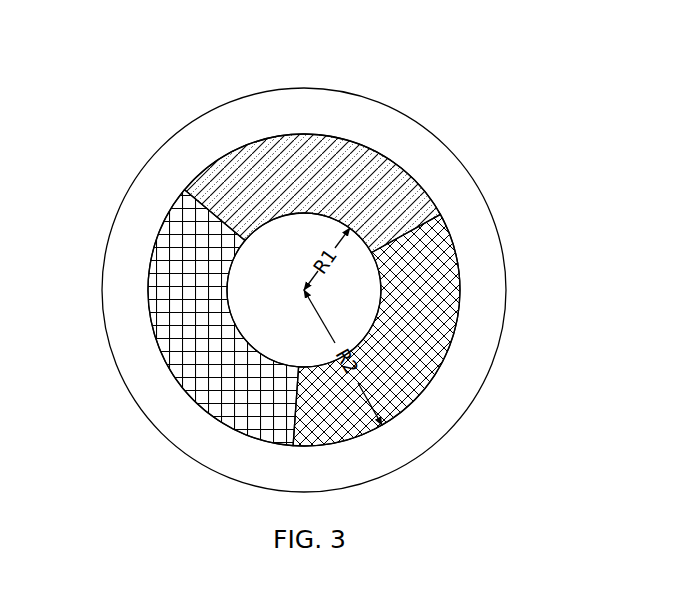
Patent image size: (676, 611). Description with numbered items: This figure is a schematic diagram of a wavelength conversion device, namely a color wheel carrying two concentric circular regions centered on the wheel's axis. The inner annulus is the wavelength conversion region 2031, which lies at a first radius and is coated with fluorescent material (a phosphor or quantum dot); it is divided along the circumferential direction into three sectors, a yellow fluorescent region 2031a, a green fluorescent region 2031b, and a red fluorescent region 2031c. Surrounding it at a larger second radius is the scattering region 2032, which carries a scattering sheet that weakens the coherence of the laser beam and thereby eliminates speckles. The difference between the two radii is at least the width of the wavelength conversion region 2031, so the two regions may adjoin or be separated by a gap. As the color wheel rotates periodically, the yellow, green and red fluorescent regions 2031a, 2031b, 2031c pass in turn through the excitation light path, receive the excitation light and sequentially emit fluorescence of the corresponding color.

The wavelength conversion region 2031 is at (72, 190).
The yellow fluorescent region 2031a is at (438, 253).
The green fluorescent region 2031b is at (250, 155).
The red fluorescent region 2031c is at (190, 218).
The scattering region 2032 is at (347, 127).